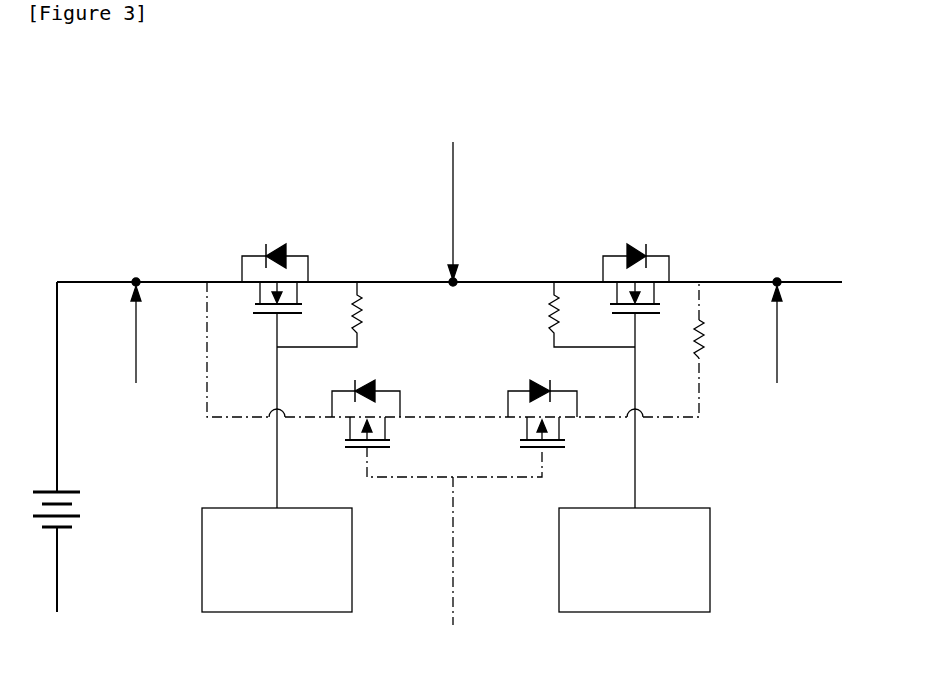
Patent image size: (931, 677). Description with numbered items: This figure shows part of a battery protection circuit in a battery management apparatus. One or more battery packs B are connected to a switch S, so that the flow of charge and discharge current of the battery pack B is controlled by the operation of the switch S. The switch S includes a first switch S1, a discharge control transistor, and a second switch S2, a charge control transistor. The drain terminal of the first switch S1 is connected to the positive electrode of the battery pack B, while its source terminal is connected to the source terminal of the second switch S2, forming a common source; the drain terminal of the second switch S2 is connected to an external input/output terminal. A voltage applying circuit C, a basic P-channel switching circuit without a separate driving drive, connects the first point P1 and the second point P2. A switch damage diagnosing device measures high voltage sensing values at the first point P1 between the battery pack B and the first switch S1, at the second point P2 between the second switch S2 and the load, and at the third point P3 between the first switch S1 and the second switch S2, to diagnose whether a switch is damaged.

The switch S is at (199, 118).
The first switch (DFET) S1 is at (281, 218).
The second switch (CFET) S2 is at (635, 218).
The first point P1 is at (136, 352).
The second point P2 is at (775, 354).
The third point P3 is at (455, 200).
The battery pack B is at (80, 518).
The voltage applying circuit C is at (673, 420).